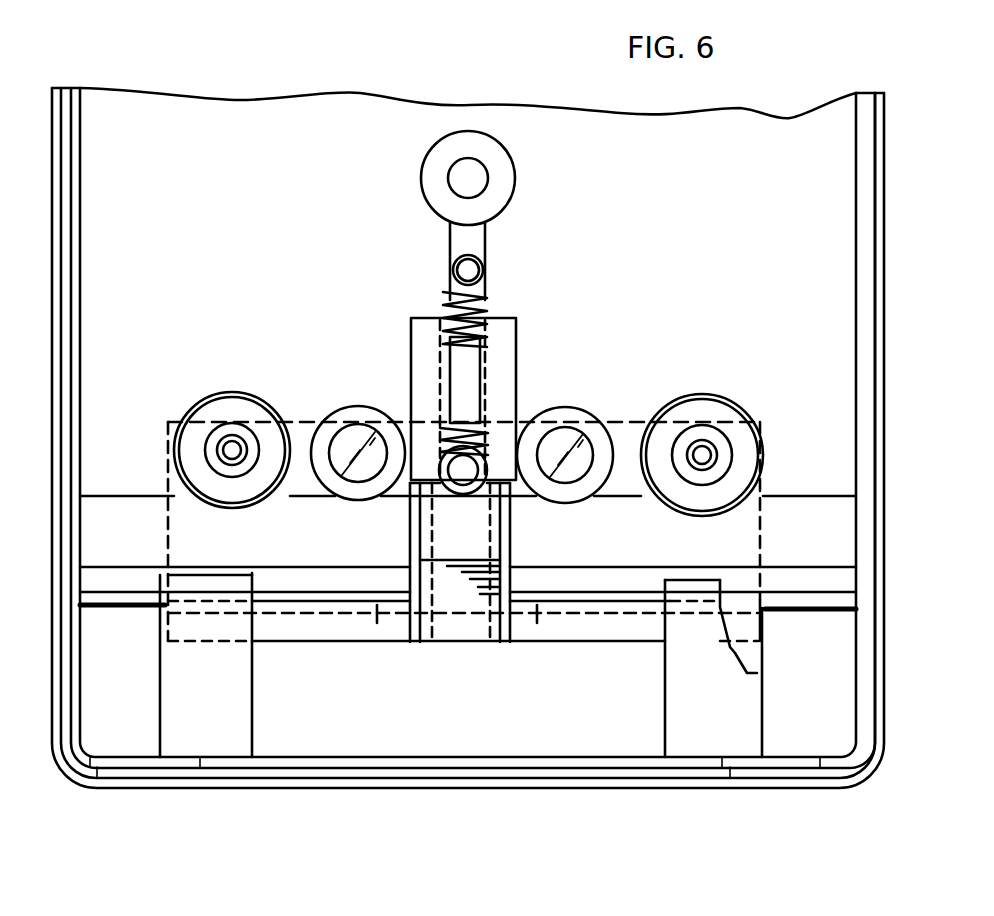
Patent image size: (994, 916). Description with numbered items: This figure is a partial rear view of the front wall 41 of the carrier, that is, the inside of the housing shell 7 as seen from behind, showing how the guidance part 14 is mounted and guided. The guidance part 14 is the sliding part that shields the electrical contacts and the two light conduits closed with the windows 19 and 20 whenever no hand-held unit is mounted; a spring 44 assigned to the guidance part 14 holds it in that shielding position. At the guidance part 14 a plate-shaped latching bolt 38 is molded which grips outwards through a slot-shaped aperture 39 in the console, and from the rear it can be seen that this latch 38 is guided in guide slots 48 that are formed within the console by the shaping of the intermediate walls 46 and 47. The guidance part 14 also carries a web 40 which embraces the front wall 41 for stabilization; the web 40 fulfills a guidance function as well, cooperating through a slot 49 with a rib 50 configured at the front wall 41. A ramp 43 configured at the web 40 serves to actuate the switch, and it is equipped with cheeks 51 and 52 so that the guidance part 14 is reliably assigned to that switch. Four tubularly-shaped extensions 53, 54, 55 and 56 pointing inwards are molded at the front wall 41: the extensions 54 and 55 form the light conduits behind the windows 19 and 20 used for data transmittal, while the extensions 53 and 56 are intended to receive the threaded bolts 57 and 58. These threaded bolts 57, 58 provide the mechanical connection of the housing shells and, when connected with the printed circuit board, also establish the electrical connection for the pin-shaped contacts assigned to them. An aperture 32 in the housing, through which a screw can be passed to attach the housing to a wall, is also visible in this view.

The housing shell 7 is at (205, 72).
The guidance part 14 is at (318, 668).
The window 19 is at (572, 447).
The window 20 is at (340, 440).
The aperture 32 is at (480, 180).
The latching bolt 38 is at (555, 628).
The slot-shaped aperture 39 is at (348, 612).
The web 40 is at (500, 333).
The front wall 41 is at (185, 228).
The ramp 43 is at (493, 546).
The spring 44 is at (489, 297).
The intermediate wall 46 is at (682, 723).
The intermediate wall 47 is at (175, 702).
The guide slot 48 is at (765, 664).
The slot 49 is at (446, 353).
The rib 50 is at (466, 377).
The cheek 51 is at (413, 513).
The cheek 52 is at (500, 522).
The tubularly-shaped extension 53 is at (226, 408).
The tubularly-shaped extension 54 is at (345, 482).
The tubularly-shaped extension 55 is at (632, 424).
The tubularly-shaped extension 56 is at (738, 413).
The threaded bolt 57 is at (722, 454).
The threaded bolt 58 is at (205, 457).